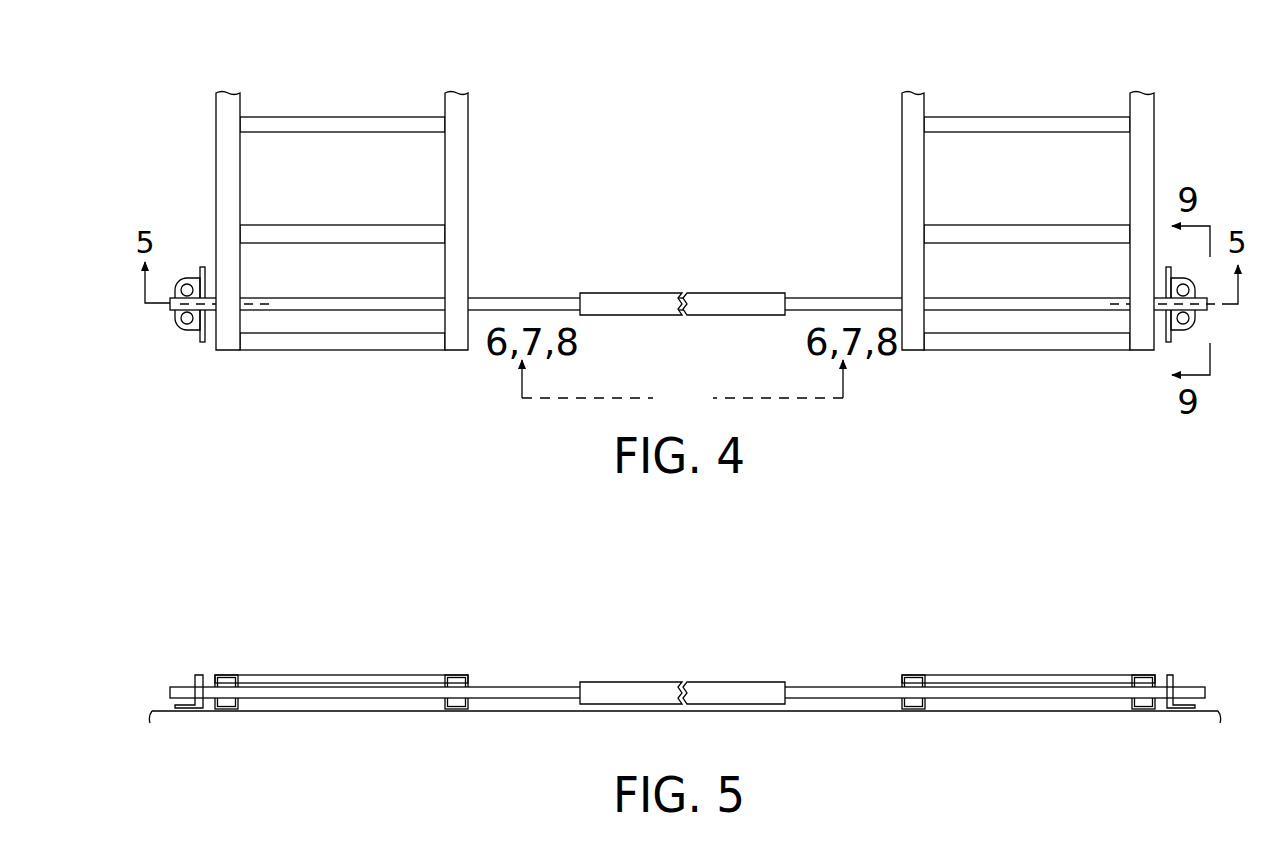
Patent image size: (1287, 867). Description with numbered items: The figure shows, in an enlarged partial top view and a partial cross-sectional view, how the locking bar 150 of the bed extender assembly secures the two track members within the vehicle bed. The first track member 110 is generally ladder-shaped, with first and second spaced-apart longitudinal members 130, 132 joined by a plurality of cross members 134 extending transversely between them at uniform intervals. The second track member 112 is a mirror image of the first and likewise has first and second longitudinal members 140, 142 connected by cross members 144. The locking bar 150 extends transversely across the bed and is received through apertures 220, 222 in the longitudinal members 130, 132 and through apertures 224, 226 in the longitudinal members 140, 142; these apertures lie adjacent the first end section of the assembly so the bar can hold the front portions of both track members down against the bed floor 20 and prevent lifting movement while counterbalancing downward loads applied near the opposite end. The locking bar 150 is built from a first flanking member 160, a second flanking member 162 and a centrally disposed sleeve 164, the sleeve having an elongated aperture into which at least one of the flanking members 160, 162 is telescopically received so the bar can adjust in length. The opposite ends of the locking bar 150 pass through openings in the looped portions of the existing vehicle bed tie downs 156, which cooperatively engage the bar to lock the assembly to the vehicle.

In FIG. 5, the bed floor 20 is at (853, 713).
In FIG. 4, the first track member 110 is at (1028, 185).
In FIG. 5, the first track member 110 is at (1028, 688).
In FIG. 4, the second track member 112 is at (340, 185).
In FIG. 5, the second track member 112 is at (341, 688).
In FIG. 4, the first longitudinal member 130 is at (1147, 152).
In FIG. 4, the second longitudinal member 132 is at (909, 152).
In FIG. 4, the cross members 134 is at (1018, 123).
In FIG. 4, the first longitudinal member 140 is at (229, 152).
In FIG. 4, the second longitudinal member 142 is at (462, 153).
In FIG. 4, the cross members 144 is at (330, 123).
In FIG. 4, the locking bar 150 is at (696, 255).
In FIG. 5, the locking bar 150 is at (687, 642).
In FIG. 4, the vehicle bed tie downs 156 is at (177, 337).
In FIG. 5, the vehicle bed tie downs 156 is at (202, 673).
In FIG. 5, the first flanking member 160 is at (518, 685).
In FIG. 5, the second flanking member 162 is at (847, 685).
In FIG. 4, the sleeve 164 is at (735, 302).
In FIG. 5, the sleeve 164 is at (735, 688).
In FIG. 5, the aperture 220 is at (1125, 700).
In FIG. 5, the aperture 222 is at (927, 700).
In FIG. 5, the aperture 224 is at (438, 700).
In FIG. 5, the aperture 226 is at (242, 700).